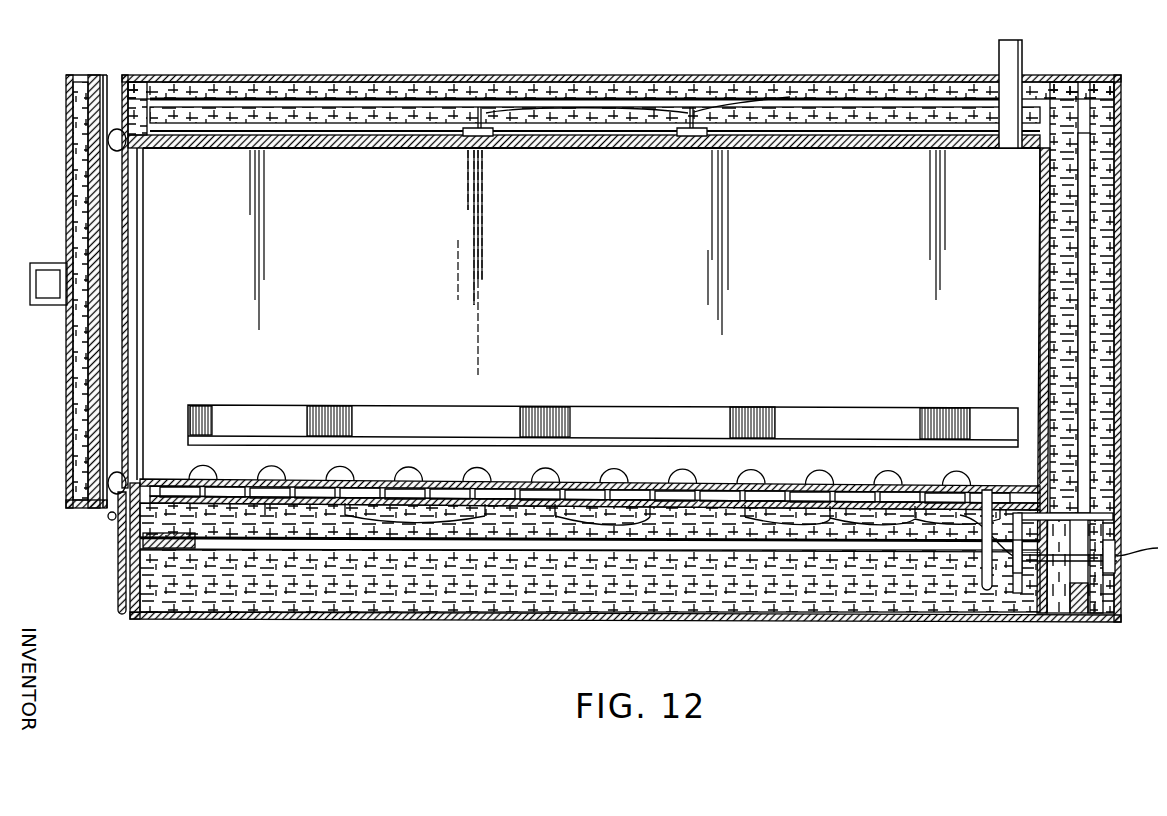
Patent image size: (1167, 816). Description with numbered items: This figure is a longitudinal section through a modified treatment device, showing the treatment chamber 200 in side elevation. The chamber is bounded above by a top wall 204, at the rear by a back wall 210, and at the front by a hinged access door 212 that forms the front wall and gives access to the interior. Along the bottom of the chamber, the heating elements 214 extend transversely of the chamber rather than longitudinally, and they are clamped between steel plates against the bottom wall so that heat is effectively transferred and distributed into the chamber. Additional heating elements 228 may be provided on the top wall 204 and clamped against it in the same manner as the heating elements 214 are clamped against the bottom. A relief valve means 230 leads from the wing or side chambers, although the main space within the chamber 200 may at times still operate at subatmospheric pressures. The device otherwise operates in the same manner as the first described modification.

The treatment chamber 200 is at (592, 320).
The top wall 204 is at (793, 149).
The back wall 210 is at (1040, 290).
The hinged access door 212 is at (87, 337).
The heating elements 214 is at (357, 490).
The heating elements 228 is at (672, 149).
The relief valve means 230 is at (999, 62).